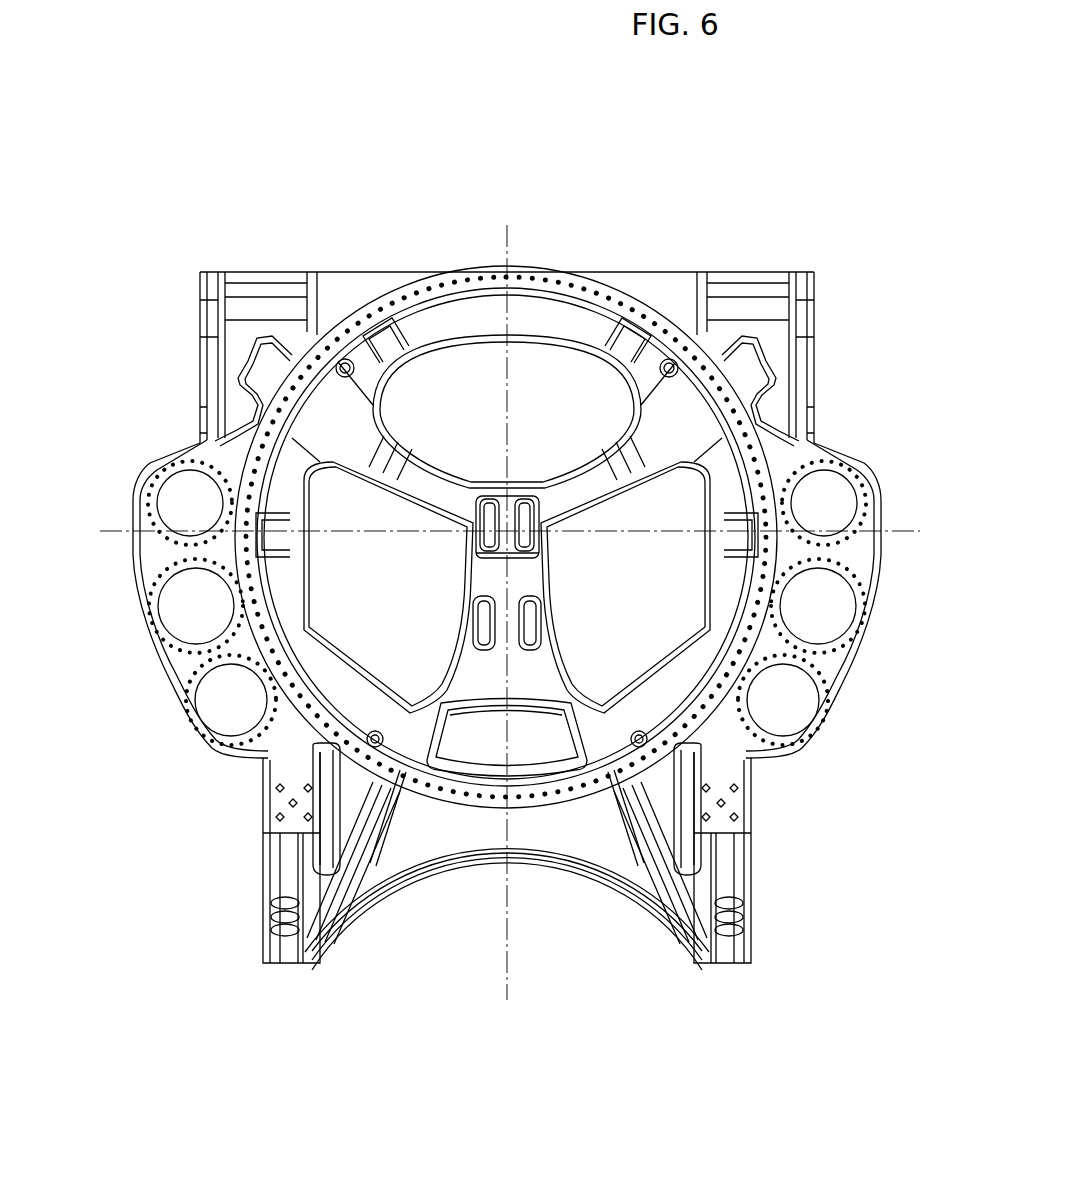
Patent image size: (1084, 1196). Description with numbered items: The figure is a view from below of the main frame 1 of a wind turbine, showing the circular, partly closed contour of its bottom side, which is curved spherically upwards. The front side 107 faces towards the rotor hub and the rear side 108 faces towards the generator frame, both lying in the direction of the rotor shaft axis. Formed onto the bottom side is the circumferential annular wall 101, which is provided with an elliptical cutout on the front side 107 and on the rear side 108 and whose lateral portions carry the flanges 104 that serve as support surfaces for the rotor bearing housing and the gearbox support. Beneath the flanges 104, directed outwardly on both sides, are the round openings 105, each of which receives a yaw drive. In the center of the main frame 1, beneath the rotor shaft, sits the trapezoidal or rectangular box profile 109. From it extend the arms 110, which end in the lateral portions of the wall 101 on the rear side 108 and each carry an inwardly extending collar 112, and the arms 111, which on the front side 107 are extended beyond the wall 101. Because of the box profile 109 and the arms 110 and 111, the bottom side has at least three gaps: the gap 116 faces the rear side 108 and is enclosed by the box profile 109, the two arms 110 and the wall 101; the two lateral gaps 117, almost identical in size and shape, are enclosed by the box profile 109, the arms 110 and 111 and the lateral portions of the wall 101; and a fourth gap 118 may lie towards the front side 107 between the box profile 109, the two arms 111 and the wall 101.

The main frame 1 is at (536, 77).
The annular wall 101 is at (390, 305).
The flanges 104 is at (723, 960).
The round openings 105 is at (180, 604).
The front side 107 is at (466, 933).
The rear side 108 is at (475, 222).
The box profile 109 is at (553, 588).
The arms 110 is at (352, 421).
The collar 112 is at (662, 421).
The arms 111 is at (369, 867).
The gap 116 is at (493, 357).
The lateral gaps 117 is at (415, 615).
The fourth gap 118 is at (527, 733).